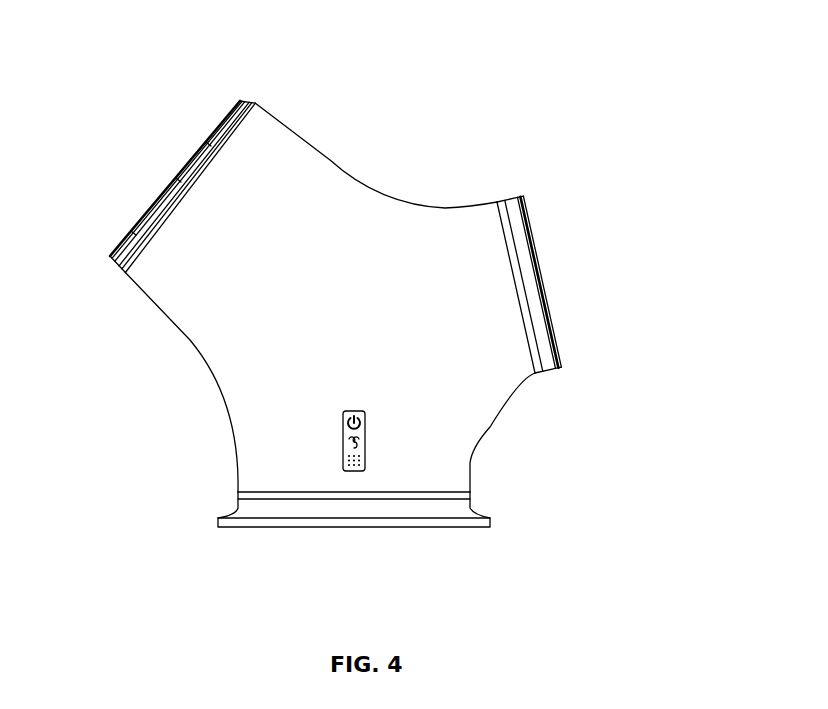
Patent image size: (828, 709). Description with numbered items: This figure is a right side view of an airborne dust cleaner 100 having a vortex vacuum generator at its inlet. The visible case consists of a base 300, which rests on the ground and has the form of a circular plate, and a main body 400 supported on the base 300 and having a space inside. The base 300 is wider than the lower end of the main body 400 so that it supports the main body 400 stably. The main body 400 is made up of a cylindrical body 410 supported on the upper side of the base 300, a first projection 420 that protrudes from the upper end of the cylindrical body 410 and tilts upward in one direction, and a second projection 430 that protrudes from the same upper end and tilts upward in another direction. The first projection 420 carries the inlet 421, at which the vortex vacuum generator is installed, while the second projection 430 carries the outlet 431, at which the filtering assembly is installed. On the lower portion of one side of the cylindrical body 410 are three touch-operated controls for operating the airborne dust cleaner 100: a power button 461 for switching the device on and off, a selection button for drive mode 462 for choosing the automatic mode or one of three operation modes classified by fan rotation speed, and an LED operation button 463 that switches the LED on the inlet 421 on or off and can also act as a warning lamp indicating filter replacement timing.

The airborne dust cleaner 100 is at (113, 73).
The base 300 is at (238, 507).
The main body 400 is at (188, 357).
The cylindrical body 410 is at (432, 443).
The first projection 420 is at (285, 158).
The inlet 421 is at (183, 170).
The second projection 430 is at (455, 237).
The outlet 431 is at (543, 285).
The power button 461 is at (346, 425).
The selection button for drive mode 462 is at (362, 442).
The LED operation button 463 is at (356, 471).